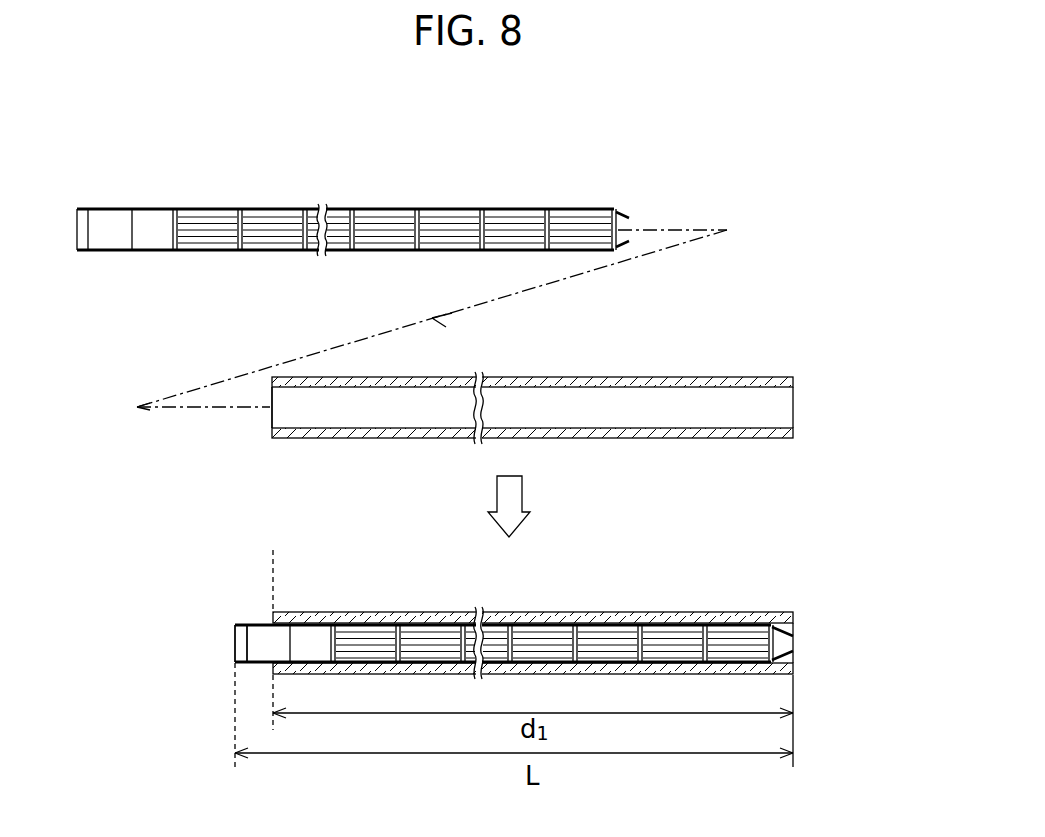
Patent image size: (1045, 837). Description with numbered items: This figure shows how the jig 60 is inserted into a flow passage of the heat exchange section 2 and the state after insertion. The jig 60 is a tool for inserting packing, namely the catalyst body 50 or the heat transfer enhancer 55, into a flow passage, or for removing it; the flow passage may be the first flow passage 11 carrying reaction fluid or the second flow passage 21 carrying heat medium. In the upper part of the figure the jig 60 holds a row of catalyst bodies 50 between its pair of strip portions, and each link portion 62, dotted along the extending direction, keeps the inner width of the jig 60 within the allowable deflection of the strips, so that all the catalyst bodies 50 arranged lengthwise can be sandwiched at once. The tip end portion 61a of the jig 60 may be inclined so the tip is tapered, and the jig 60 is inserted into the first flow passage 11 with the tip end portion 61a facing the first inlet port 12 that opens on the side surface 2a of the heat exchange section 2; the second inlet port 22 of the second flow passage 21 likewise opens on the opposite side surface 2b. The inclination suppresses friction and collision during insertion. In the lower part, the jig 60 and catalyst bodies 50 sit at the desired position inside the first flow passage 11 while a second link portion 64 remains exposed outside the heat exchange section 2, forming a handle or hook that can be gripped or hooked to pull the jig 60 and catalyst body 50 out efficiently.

The heat exchange section 2 is at (731, 375).
The side surface 2a is at (250, 558).
The side surface 2b is at (271, 562).
The first flow passage 11 is at (506, 513).
The second flow passage 21 is at (707, 422).
The first inlet port 12 is at (193, 429).
The second inlet port 22 is at (272, 420).
The catalyst body 50 is at (470, 401).
The heat transfer enhancer 55 is at (215, 222).
The jig 60 is at (119, 208).
The tip end portion 61a is at (623, 246).
The link portion 62 is at (177, 661).
The second link portion 64 is at (245, 644).